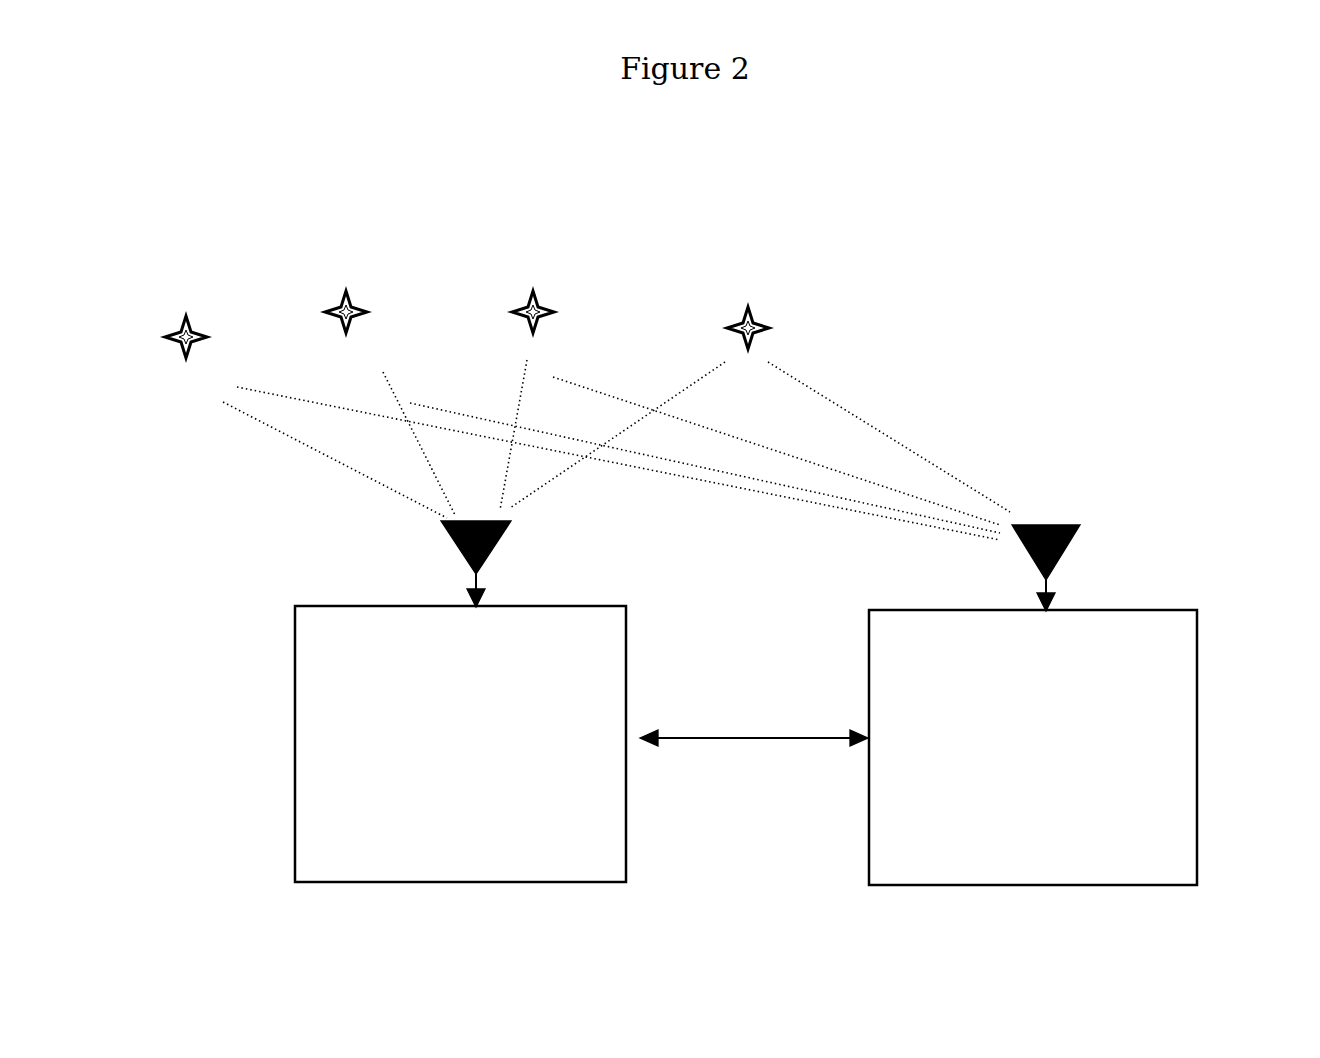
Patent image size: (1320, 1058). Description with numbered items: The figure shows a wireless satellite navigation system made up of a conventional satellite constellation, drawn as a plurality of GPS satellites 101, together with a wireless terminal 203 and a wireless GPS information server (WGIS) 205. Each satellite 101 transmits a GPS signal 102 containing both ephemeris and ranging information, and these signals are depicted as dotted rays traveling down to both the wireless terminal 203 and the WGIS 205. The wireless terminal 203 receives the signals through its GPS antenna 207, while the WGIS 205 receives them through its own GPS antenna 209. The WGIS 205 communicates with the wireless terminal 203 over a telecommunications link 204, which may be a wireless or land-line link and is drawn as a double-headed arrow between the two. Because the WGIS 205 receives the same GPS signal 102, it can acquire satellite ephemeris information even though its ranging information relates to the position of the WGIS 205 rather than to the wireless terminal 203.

The GPS satellite 101 is at (186, 325).
The GPS signal 102 is at (290, 453).
The wireless terminal 203 is at (294, 779).
The telecommunications link 204 is at (741, 730).
The wireless GPS information server (WGIS) 205 is at (1200, 762).
The GPS antenna 207 is at (497, 558).
The GPS antenna 209 is at (1062, 566).